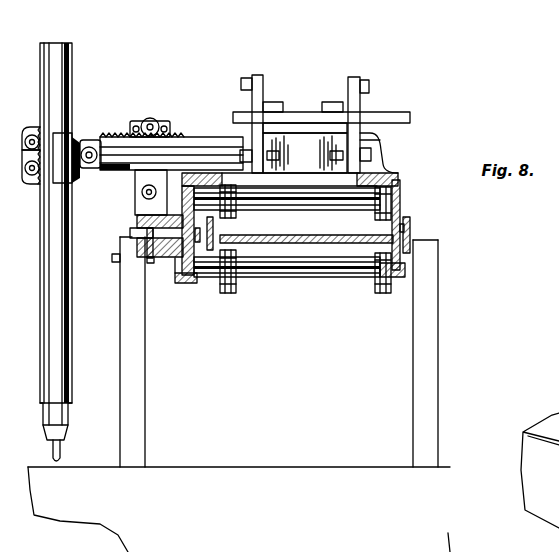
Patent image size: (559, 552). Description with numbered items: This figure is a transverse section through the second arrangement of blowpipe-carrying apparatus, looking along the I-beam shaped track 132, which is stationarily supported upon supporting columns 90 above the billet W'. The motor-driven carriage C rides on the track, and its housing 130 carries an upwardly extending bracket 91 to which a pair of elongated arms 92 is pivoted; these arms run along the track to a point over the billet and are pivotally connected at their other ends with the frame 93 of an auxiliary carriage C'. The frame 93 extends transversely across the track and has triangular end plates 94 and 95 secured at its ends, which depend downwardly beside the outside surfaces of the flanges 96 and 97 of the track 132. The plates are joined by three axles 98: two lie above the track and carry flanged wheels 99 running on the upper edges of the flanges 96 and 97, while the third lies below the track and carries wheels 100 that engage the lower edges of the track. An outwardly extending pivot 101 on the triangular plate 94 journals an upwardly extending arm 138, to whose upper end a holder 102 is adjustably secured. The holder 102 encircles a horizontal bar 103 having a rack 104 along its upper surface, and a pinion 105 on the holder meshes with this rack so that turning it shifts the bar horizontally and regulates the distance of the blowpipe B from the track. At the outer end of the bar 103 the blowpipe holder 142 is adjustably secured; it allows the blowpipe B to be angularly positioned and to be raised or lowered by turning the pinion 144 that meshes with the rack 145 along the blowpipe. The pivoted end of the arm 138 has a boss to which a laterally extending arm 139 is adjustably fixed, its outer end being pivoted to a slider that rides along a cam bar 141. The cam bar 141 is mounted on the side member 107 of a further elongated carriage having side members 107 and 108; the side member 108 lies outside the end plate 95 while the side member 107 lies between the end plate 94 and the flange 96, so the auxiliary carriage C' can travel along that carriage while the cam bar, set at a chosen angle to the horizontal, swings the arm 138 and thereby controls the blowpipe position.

The blowpipe B is at (72, 307).
The blowpipe holder 142 is at (84, 138).
The pinion 144 is at (40, 184).
The rack 145 is at (40, 130).
The rack 104 is at (118, 134).
The pinion 105 is at (150, 120).
The horizontal bar 103 is at (185, 148).
The holder 102 is at (140, 174).
The arm 138 is at (137, 207).
The pivot 101 is at (130, 232).
The bracket 91 is at (247, 78).
The elongated arms 92 is at (256, 102).
The frame 93 is at (302, 173).
The housing 130 is at (380, 163).
The carriage C is at (394, 139).
The auxiliary carriage C' is at (402, 182).
The flange 96 is at (213, 252).
The triangular end plate 94 is at (188, 250).
The laterally extending arm 139 is at (173, 263).
The cam bar 141 is at (199, 244).
The side member 107 is at (216, 240).
The axles 98 is at (318, 202).
The flanged wheels 99 is at (237, 211).
The wheels 100 is at (236, 286).
The I-beam shaped track 132 is at (307, 244).
The side member 108 is at (410, 220).
The triangular end plate 95 is at (406, 228).
The flange 97 is at (405, 248).
The supporting columns 90 is at (147, 379).
The billet W' is at (239, 492).